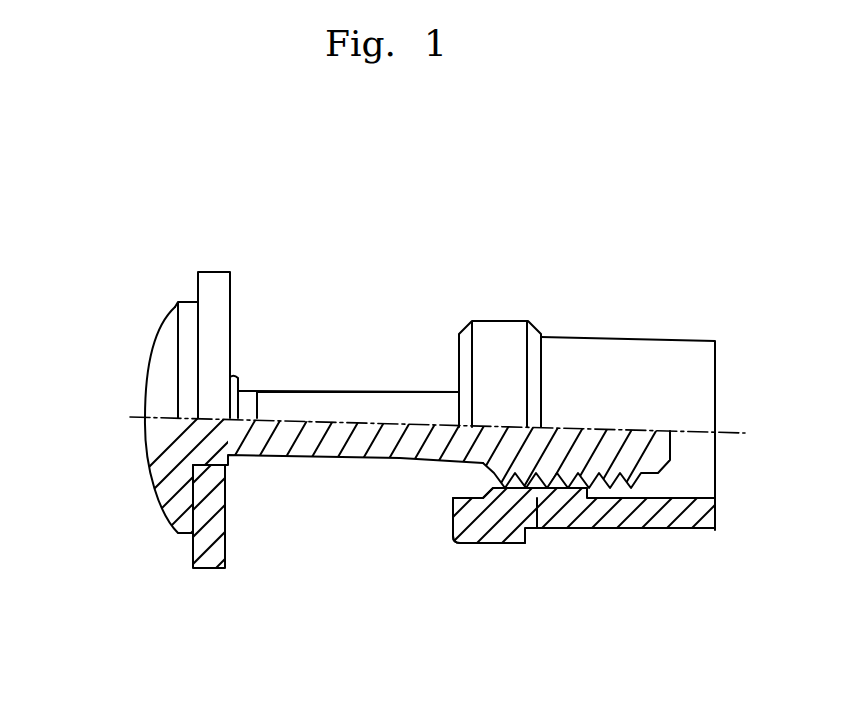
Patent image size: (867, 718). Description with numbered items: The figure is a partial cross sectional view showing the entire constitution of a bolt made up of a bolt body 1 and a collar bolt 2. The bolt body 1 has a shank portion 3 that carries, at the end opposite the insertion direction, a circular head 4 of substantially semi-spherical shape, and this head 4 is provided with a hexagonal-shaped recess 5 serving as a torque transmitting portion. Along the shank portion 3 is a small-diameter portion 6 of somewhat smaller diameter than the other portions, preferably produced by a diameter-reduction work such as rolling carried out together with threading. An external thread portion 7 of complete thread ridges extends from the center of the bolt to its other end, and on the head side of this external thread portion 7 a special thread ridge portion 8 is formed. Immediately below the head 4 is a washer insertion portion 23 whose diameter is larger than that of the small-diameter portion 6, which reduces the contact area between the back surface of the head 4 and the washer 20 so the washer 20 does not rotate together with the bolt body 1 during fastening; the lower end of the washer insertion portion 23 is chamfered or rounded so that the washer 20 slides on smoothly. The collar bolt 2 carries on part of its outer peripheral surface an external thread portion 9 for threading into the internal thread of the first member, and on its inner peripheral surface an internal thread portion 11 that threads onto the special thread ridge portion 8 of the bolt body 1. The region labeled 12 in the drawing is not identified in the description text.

The bolt body 1 is at (401, 376).
The collar bolt 2 is at (632, 324).
The shank portion 3 is at (375, 455).
The circular head 4 is at (172, 340).
The hexagonal-shaped recess 5 is at (158, 437).
The small-diameter portion 6 is at (343, 388).
The external thread portion 7 is at (584, 495).
The special thread ridge portion 8 is at (484, 466).
The external thread portion 9 is at (512, 323).
The internal thread portion 11 is at (484, 487).
The gap 12 is at (316, 510).
The washer 20 is at (219, 324).
The washer insertion portion 23 is at (247, 395).